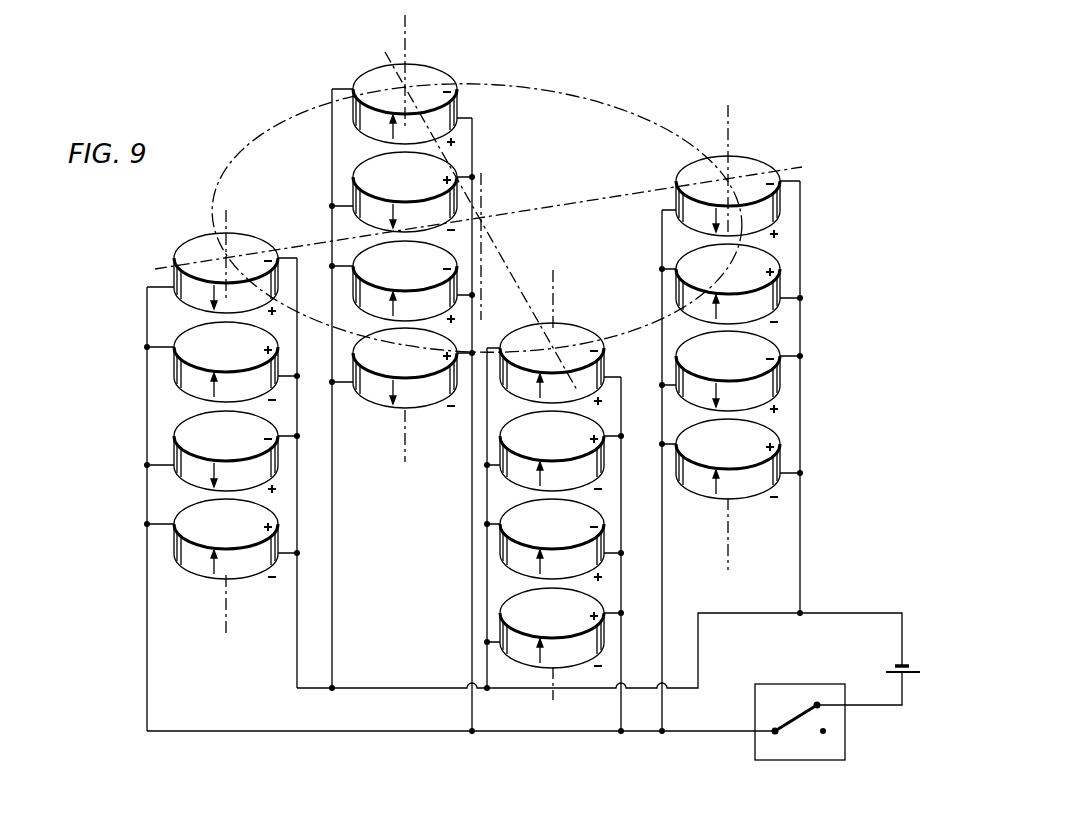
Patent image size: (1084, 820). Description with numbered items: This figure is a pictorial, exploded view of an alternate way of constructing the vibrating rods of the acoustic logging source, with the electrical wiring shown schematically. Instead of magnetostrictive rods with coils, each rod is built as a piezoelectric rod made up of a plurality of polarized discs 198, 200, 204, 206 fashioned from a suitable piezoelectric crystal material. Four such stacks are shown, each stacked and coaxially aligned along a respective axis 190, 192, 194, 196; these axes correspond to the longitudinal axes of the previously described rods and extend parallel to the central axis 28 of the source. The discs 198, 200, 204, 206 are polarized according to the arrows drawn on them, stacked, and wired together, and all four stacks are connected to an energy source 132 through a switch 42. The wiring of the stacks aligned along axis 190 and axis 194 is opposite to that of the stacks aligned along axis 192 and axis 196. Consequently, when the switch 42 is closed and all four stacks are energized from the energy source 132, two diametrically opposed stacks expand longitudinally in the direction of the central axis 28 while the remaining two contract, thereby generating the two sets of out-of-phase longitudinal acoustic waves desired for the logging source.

The central axis 28 is at (485, 182).
The switch 42 is at (805, 684).
The energy source 132 is at (912, 673).
The axis 190 is at (230, 220).
The axis 192 is at (556, 283).
The axis 194 is at (733, 118).
The axis 196 is at (407, 32).
The polarized discs 198 is at (193, 290).
The polarized discs 200 is at (595, 372).
The polarized discs 204 is at (763, 213).
The polarized discs 206 is at (362, 118).